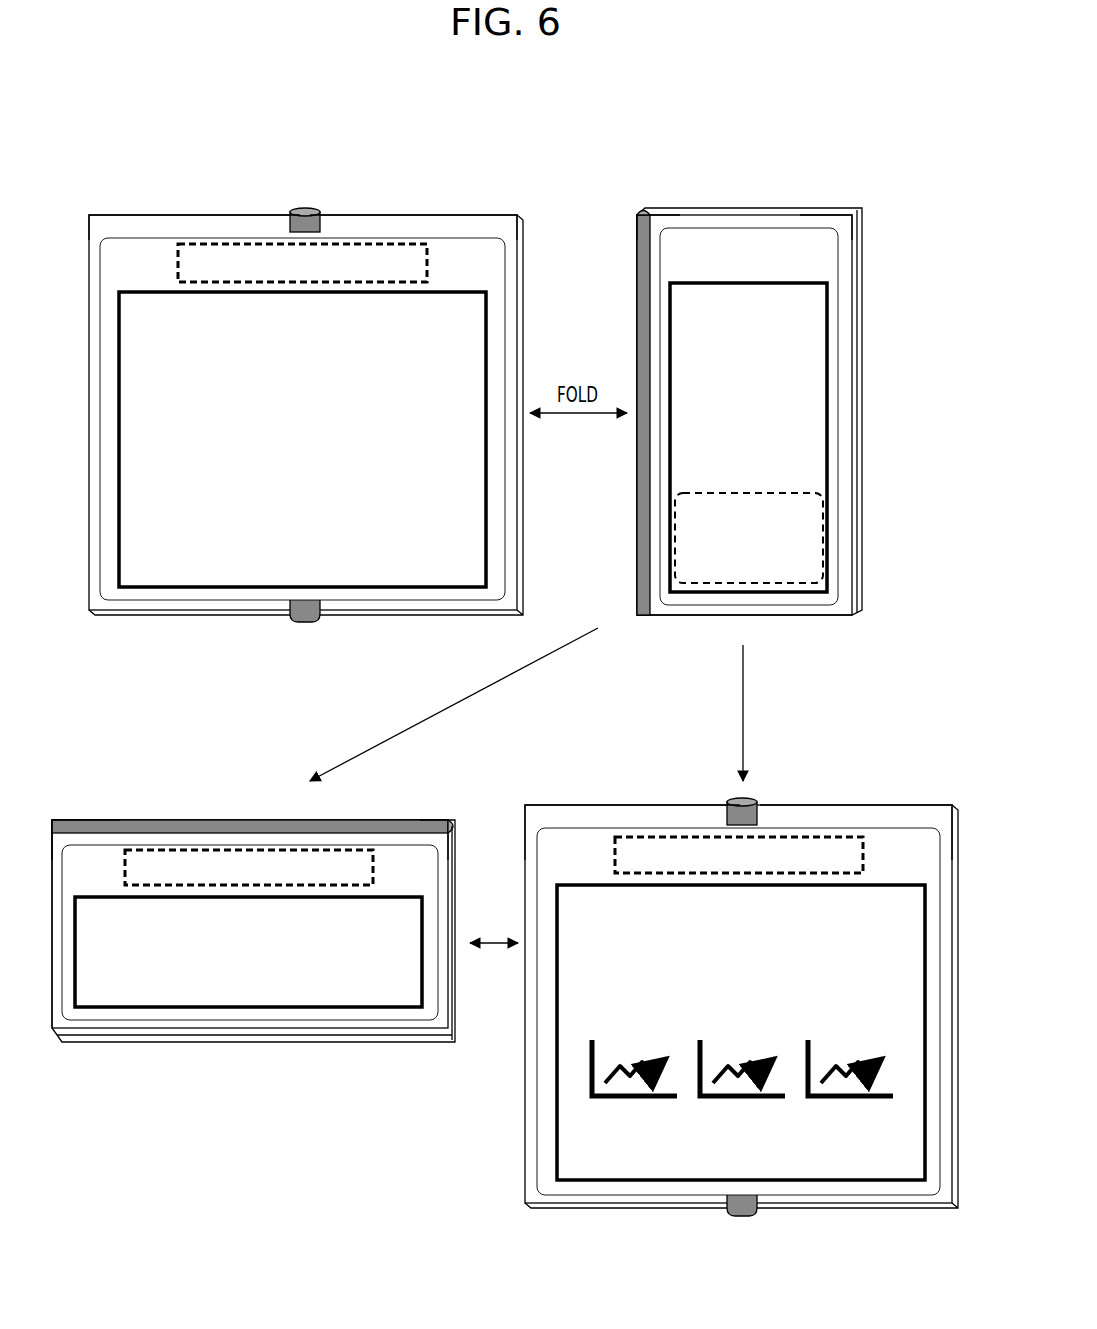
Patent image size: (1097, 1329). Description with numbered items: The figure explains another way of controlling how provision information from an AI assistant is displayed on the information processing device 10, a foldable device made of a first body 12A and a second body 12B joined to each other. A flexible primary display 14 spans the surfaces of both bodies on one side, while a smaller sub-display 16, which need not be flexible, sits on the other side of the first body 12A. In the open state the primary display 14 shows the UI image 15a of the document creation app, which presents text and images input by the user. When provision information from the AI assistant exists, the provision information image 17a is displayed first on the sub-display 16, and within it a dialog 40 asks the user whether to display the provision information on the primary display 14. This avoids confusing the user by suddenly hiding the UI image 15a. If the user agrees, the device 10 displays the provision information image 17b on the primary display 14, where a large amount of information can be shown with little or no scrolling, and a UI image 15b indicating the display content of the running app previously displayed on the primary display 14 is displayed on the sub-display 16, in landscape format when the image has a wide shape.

The information processing device 10 is at (306, 196).
The first body 12A is at (140, 213).
The second body 12B is at (430, 213).
The primary display 14 is at (240, 244).
The sub-display 16 is at (730, 240).
The UI image 15a is at (180, 568).
The UI image 15b is at (318, 1008).
The provision information image 17a is at (827, 328).
The provision information image 17b is at (565, 1083).
The dialog 40 is at (787, 493).